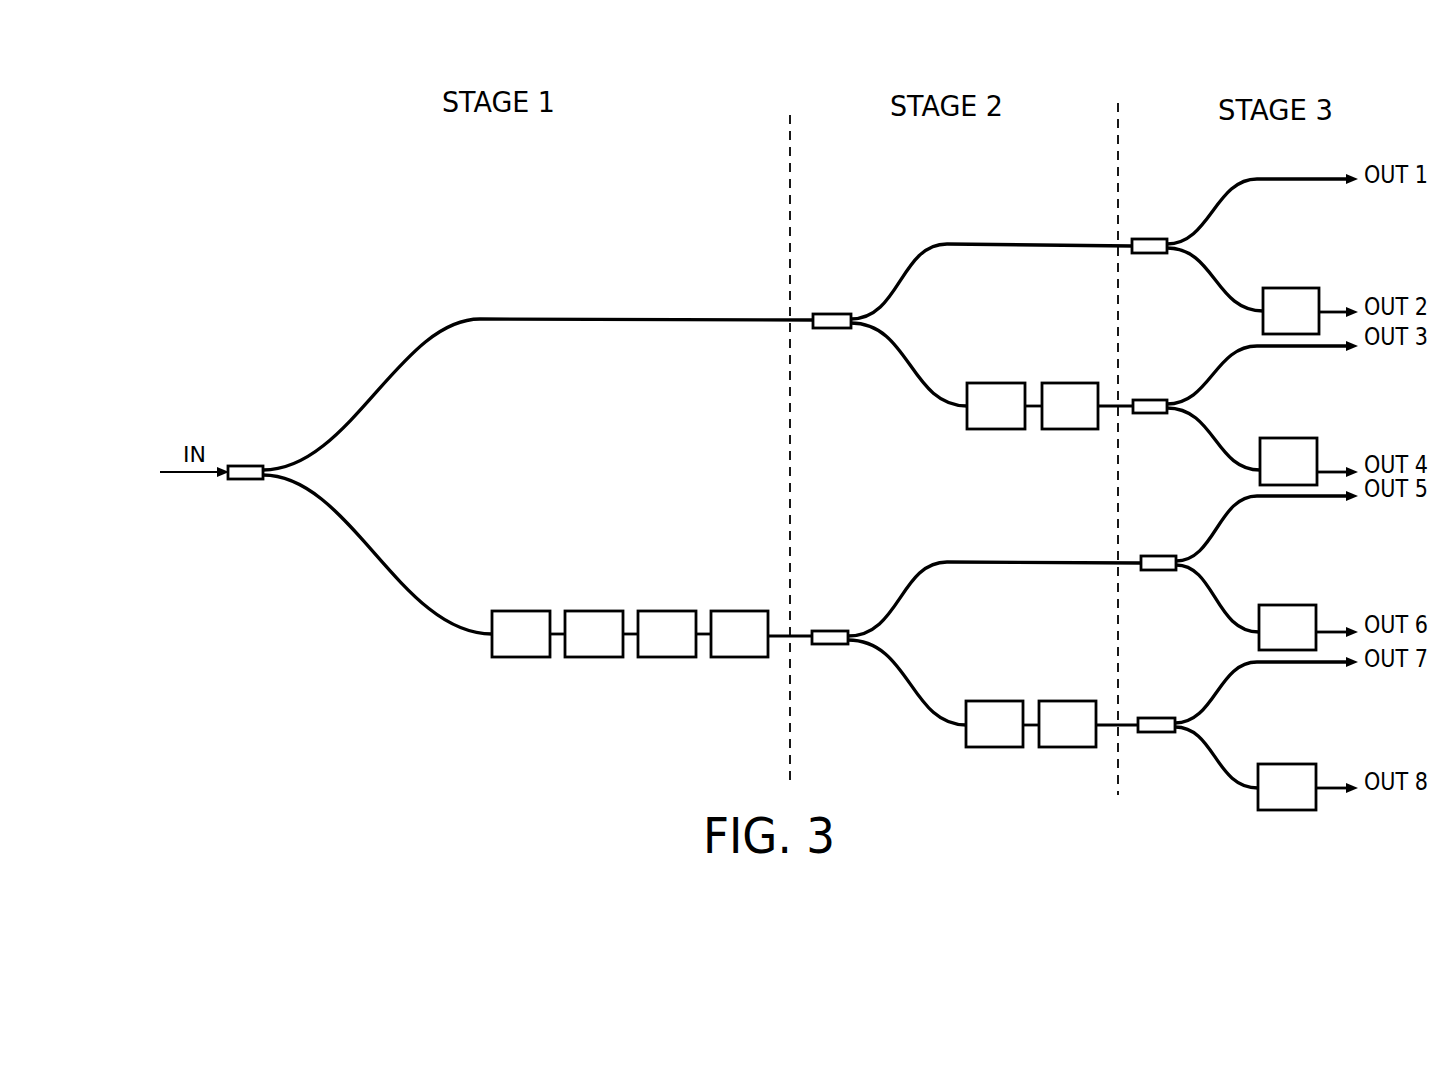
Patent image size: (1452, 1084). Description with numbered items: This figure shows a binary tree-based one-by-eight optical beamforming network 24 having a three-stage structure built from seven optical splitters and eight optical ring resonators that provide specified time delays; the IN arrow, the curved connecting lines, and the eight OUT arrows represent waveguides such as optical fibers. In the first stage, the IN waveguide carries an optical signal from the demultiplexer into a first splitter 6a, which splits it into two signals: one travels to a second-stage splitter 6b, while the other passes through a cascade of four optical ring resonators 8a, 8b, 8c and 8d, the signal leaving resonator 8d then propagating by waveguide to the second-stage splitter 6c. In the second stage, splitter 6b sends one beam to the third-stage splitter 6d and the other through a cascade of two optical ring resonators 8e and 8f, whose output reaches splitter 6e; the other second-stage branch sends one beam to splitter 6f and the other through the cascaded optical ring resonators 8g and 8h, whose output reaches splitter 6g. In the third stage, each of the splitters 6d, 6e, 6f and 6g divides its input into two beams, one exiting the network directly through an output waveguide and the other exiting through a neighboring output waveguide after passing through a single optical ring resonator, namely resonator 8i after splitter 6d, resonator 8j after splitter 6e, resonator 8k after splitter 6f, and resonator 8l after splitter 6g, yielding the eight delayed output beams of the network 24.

The optical beamforming network 24 is at (318, 172).
The first splitter 6a is at (240, 465).
The splitter 6b is at (827, 313).
The splitter 6c is at (826, 630).
The splitter 6d is at (1143, 238).
The splitter 6e is at (1143, 399).
The splitter 6f is at (1150, 555).
The splitter 6g is at (1148, 717).
The optical ring resonator 8a is at (520, 610).
The optical ring resonator 8b is at (593, 610).
The optical ring resonator 8c is at (666, 610).
The optical ring resonator 8d is at (738, 610).
The optical ring resonator 8e is at (997, 382).
The optical ring resonator 8f is at (1070, 382).
The optical ring resonator 8g is at (1287, 287).
The optical ring resonator 8h is at (1288, 437).
The optical ring resonator 8i is at (995, 700).
The optical ring resonator 8j is at (1068, 700).
The optical ring resonator 8k is at (1287, 604).
The optical ring resonator 8l is at (1287, 763).